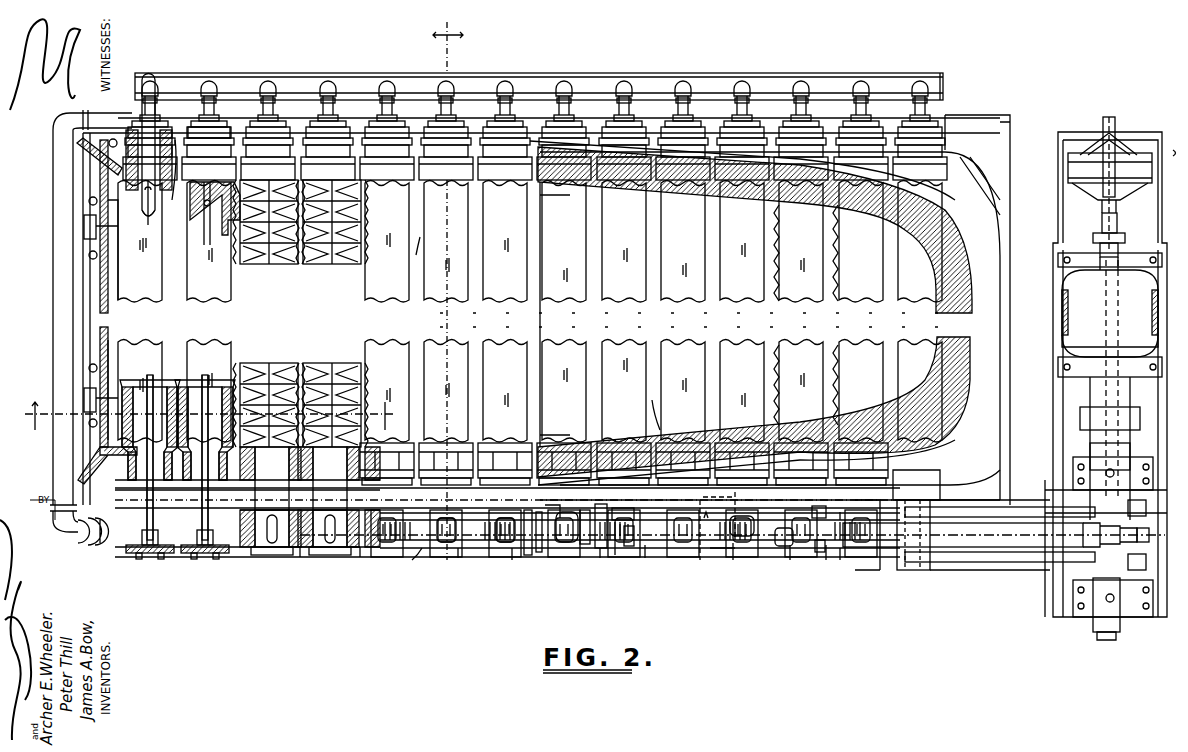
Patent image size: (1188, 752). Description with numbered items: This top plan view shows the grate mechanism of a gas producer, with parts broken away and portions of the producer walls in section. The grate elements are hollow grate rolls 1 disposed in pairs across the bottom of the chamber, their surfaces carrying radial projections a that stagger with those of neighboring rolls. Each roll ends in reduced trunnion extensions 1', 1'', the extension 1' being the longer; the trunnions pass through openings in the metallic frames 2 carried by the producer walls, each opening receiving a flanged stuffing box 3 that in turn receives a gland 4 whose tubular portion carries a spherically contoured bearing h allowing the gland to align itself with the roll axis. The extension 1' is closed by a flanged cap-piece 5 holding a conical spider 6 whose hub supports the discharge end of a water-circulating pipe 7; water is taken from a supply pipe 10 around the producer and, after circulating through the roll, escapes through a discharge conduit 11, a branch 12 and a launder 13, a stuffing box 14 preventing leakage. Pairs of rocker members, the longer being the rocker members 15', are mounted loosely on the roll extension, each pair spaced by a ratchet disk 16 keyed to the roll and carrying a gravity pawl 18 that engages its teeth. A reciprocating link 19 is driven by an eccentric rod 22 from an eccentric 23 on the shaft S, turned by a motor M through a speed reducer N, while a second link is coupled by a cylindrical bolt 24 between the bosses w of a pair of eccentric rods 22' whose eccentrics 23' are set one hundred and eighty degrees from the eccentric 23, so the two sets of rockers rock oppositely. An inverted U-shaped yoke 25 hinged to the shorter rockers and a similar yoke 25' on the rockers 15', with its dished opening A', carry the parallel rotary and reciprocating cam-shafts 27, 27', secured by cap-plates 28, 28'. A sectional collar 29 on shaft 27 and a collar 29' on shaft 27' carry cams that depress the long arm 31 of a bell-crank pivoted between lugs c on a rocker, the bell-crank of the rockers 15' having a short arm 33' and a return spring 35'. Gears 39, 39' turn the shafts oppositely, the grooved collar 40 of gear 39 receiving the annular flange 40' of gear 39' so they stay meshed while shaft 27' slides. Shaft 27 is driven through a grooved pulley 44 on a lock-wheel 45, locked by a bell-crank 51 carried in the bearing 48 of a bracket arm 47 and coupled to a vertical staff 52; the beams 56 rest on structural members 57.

The grate roll 1 is at (530, 312).
The trunnion extension 1' is at (498, 500).
The trunnion extension 1'' is at (200, 121).
The metallic frame 2 is at (100, 295).
The stuffing box 3 is at (365, 175).
The gland 4 is at (295, 140).
The flanged cap-piece 5 is at (168, 558).
The conical spider 6 is at (146, 560).
The water-circulating pipe 7 is at (208, 222).
The supply pipe 10 is at (123, 115).
The discharge conduit 11 is at (148, 210).
The branch 12 is at (152, 85).
The launder 13 is at (603, 72).
The stuffing box 14 is at (168, 130).
The rocker member 15' is at (590, 581).
The ratchet disk 16 is at (300, 560).
The gravity pawl 18 is at (442, 542).
The reciprocating link 19 is at (885, 560).
The eccentric rod 22 is at (732, 569).
The eccentric rod 22' is at (1000, 534).
The eccentric 23 is at (1151, 538).
The eccentric 23' is at (1140, 539).
The cylindrical bolt 24 is at (910, 568).
The inverted U-shaped yoke 25 is at (791, 569).
The yoke 25' is at (627, 579).
The cam-shaft 27 is at (838, 563).
The cam-shaft 27' is at (819, 571).
The cap-plate 28 is at (681, 537).
The cap plate 28' is at (741, 549).
The sectional collar 29 is at (824, 528).
The collar 29' is at (636, 562).
The long arm of bell-crank 31 is at (458, 557).
The short arm 33' is at (499, 554).
The spring 35' is at (509, 579).
The gear 39 is at (616, 518).
The gear 39' is at (609, 568).
The grooved collar 40 is at (625, 515).
The annular flange 40' is at (611, 554).
The grooved pulley 44 is at (566, 542).
The lock-wheel 45 is at (548, 520).
The bracket arm 47 is at (566, 470).
The bearing 48 is at (546, 470).
The bell-crank 51 is at (528, 555).
The vertical staff 52 is at (540, 552).
The beam 56 is at (520, 300).
The structural member 57 is at (535, 325).
The radial projection a is at (252, 245).
The lug c is at (417, 565).
The spherically contoured bearing h is at (466, 455).
The boss w is at (898, 495).
The dished opening A' is at (776, 559).
The motor M is at (1085, 168).
The speed reducer N is at (1075, 308).
The shaft S is at (1104, 640).